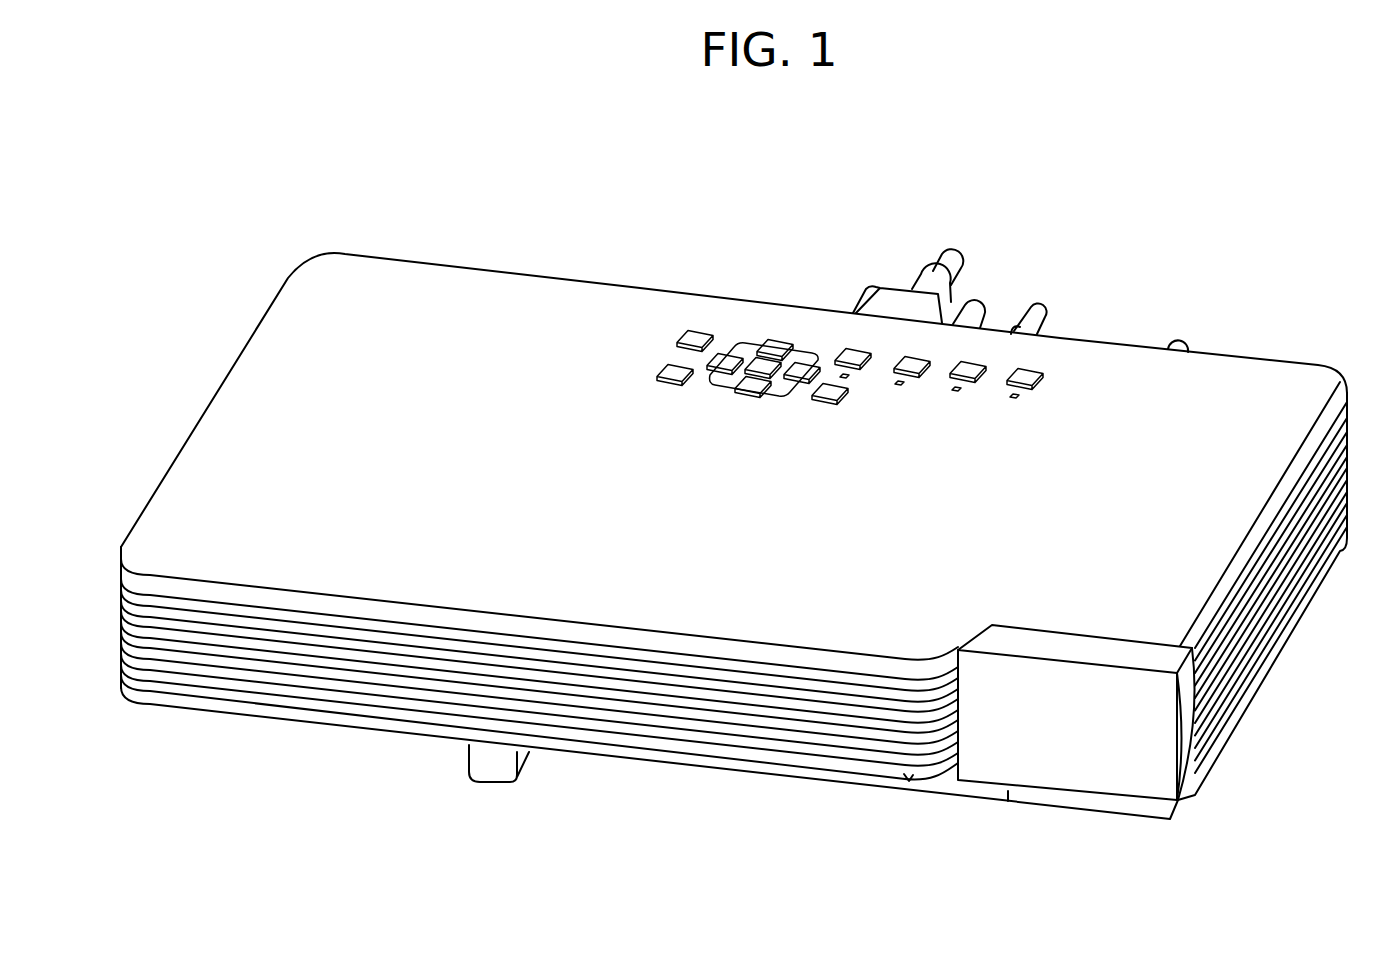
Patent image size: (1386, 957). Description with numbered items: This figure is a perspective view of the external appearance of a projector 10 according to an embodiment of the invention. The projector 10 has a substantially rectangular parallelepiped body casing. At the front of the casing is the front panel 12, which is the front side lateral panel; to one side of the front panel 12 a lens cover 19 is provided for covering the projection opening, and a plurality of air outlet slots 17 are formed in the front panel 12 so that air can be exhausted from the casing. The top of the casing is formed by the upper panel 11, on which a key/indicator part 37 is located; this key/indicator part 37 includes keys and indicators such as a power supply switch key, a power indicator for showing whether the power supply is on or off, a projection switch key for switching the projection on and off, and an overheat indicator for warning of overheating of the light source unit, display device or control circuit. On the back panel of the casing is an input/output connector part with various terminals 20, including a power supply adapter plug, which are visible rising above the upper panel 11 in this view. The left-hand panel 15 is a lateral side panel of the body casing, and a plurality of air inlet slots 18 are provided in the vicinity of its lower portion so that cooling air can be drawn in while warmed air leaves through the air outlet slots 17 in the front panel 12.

The projector 10 is at (694, 235).
The upper panel 11 is at (486, 297).
The front panel 12 is at (612, 745).
The left-hand panel 15 is at (1267, 648).
The air outlet slots 17 is at (722, 763).
The air inlet slots 18 is at (1303, 560).
The lens cover 19 is at (1072, 782).
The terminals 20 is at (985, 271).
The key/indicator part 37 is at (779, 328).